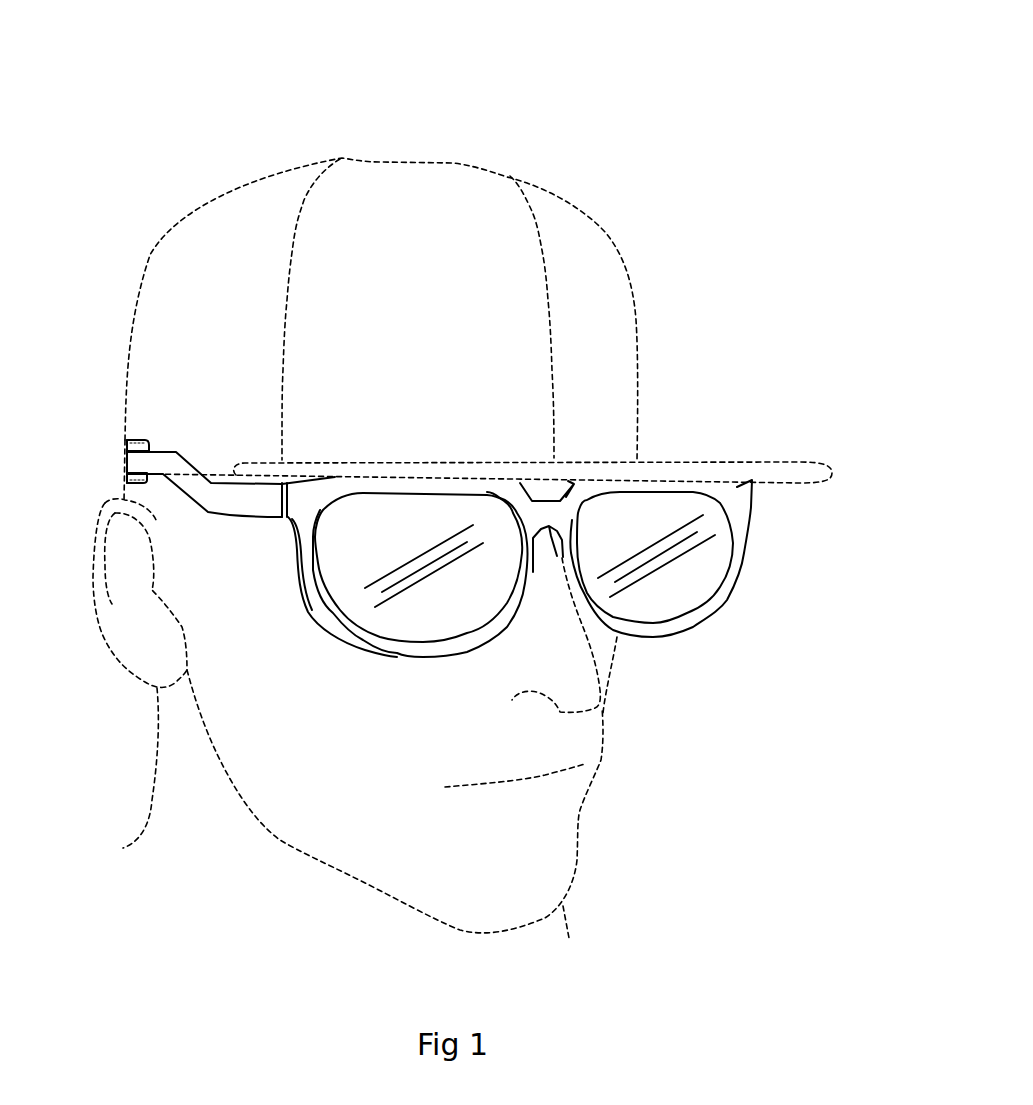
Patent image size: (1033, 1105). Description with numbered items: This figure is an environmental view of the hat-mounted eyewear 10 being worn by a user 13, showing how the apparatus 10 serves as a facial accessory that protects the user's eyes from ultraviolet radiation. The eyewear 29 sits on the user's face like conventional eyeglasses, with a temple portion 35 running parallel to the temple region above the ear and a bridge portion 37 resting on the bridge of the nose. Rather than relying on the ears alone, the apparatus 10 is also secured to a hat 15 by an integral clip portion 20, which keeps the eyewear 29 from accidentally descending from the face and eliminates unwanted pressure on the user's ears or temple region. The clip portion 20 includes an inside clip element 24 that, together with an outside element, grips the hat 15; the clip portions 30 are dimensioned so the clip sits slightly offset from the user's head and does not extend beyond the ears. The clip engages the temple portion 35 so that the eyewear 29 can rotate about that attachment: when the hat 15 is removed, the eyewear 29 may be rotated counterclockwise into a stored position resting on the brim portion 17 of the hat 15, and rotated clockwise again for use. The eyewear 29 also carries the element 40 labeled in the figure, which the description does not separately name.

The hat-mounted eyewear 10 is at (668, 128).
The user 13 is at (550, 925).
The hat 15 is at (421, 245).
The brim portion 17 is at (788, 471).
The clip portion 20 is at (104, 372).
The inside clip element 24 is at (137, 440).
The eyewear 29 is at (733, 632).
The clip portion 30 is at (320, 498).
The temple portion 35 is at (233, 498).
The bridge portion 37 is at (547, 518).
The lenses 40 is at (651, 509).